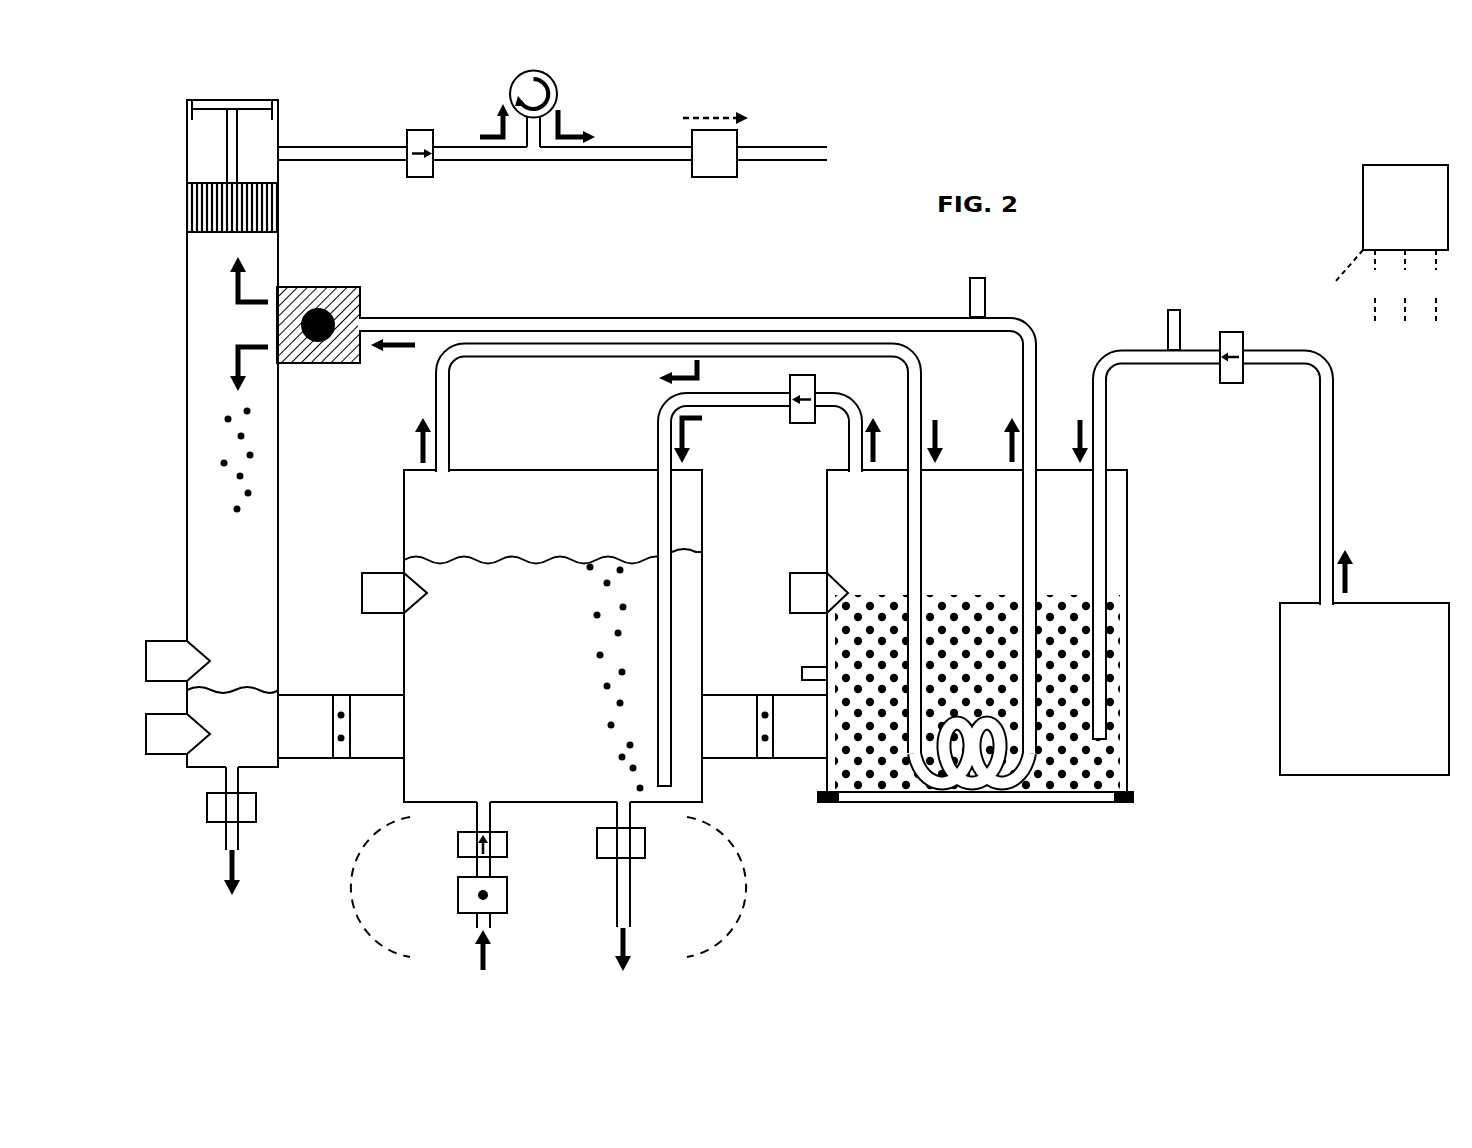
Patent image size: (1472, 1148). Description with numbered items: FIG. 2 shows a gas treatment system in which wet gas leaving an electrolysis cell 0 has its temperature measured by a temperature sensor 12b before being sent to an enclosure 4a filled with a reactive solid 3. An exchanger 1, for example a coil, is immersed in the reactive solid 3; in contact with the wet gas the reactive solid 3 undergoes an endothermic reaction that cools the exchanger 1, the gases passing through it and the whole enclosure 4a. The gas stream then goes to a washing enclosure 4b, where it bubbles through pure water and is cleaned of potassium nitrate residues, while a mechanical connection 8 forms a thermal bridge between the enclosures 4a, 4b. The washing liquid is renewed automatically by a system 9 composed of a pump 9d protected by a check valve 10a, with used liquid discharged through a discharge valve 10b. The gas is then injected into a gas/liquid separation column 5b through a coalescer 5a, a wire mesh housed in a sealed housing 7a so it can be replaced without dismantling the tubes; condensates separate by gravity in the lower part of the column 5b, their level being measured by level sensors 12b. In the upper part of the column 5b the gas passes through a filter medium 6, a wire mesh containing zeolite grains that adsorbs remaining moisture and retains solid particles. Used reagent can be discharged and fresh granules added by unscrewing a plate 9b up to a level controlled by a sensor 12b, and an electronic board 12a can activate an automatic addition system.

The electrolysis cell 0 is at (1391, 596).
The exchanger 1 is at (1038, 779).
The reactive solid 3 is at (1113, 683).
The enclosure 4a is at (1137, 572).
The washing enclosure 4b is at (397, 662).
The coalescer 5a is at (319, 308).
The gas/liquid separation column 5b is at (181, 443).
The filter medium 6 is at (262, 207).
The sealed housing 7a is at (236, 96).
The mechanical connection 8 is at (314, 767).
The system 9 is at (738, 885).
The plate 9b is at (975, 795).
The pump 9d is at (452, 897).
The check valve 10a is at (421, 125).
The discharge valve 10b is at (715, 118).
The electronic board 12a is at (1406, 156).
The sensor 12b is at (563, 73).